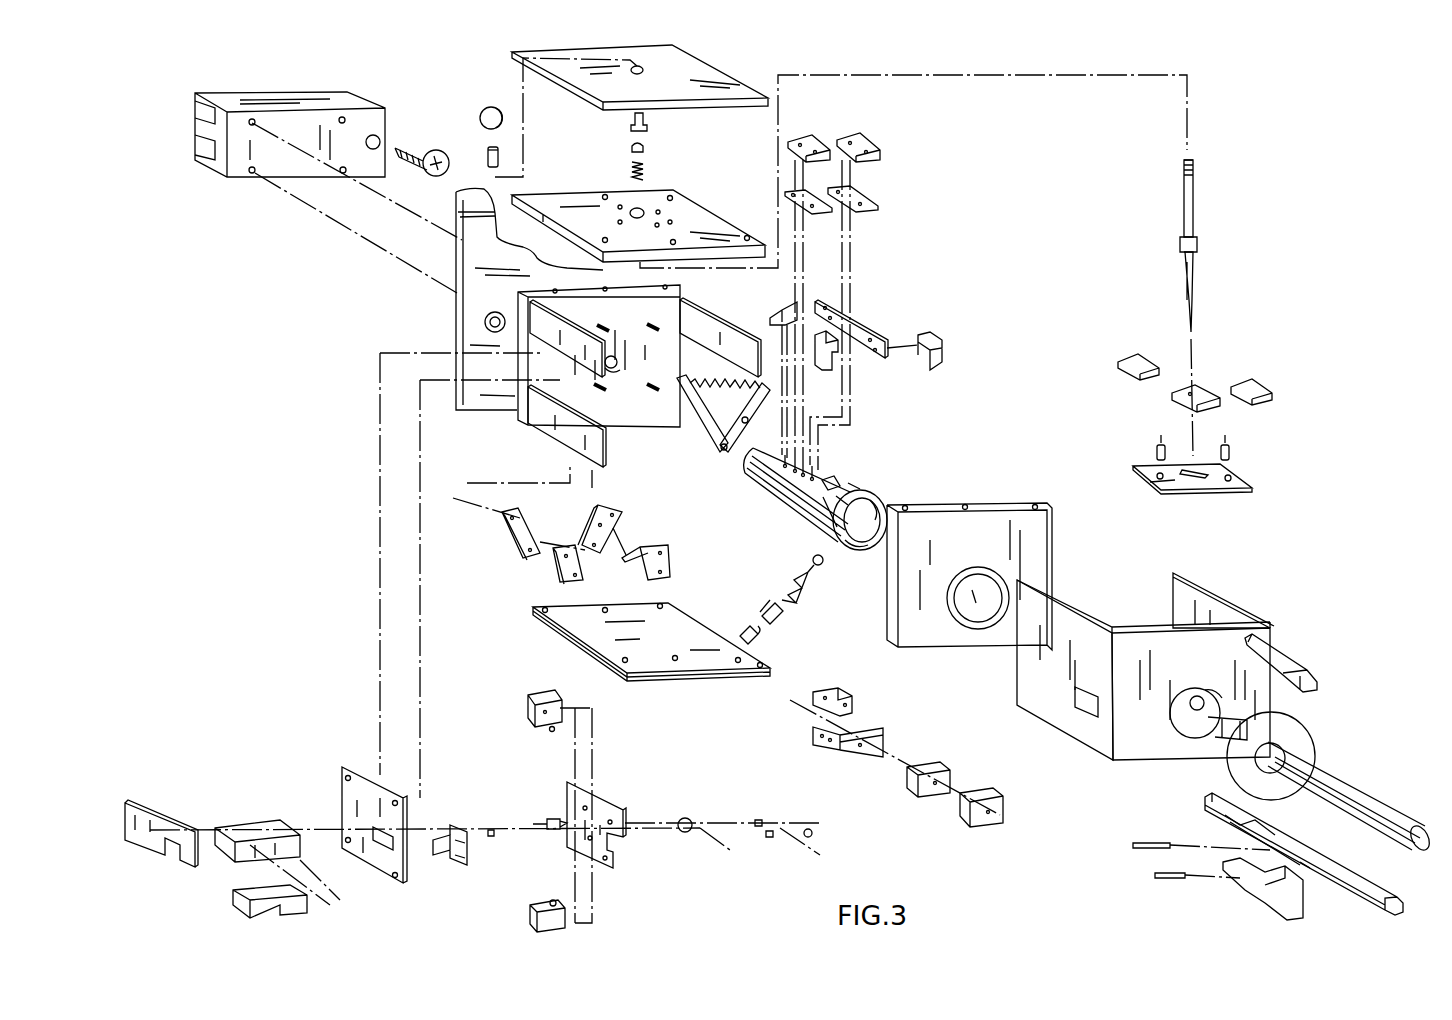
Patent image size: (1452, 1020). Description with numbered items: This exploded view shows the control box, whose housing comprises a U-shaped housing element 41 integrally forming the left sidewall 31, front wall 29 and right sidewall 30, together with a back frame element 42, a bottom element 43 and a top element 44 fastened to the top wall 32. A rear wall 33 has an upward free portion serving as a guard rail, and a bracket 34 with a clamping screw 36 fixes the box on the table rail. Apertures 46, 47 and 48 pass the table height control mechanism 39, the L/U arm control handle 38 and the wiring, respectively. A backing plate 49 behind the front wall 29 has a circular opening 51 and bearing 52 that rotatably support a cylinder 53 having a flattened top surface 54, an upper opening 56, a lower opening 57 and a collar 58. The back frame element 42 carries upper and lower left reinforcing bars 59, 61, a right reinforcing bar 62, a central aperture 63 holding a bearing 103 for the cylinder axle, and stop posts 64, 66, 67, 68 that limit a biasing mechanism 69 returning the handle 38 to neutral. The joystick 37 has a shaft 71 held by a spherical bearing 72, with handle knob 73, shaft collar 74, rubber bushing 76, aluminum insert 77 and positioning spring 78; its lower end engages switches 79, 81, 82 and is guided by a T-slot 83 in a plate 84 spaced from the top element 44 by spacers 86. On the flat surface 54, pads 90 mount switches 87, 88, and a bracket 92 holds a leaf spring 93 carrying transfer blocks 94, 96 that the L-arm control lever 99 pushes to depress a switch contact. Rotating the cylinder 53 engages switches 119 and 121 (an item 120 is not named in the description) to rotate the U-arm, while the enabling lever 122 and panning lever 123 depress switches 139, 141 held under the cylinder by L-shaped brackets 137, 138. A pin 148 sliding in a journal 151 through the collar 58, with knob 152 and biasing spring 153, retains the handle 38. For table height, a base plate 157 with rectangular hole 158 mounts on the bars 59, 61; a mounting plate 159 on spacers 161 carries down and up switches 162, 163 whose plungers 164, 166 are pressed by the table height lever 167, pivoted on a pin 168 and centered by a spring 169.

The front wall 29 is at (1135, 745).
The right sidewall 30 is at (1210, 600).
The left sidewall 31 is at (1042, 705).
The top wall 32 is at (712, 80).
The rear wall 33 is at (470, 252).
The bracket 34 is at (352, 102).
The clamping screw 36 is at (436, 150).
The joystick 37 is at (1203, 228).
The L/U arm control handle 38 is at (1326, 770).
The table height control mechanism 39 is at (265, 796).
The U-shaped housing element 41 is at (1115, 627).
The back frame element 42 is at (638, 408).
The bottom element 43 is at (595, 640).
The top element 44 is at (688, 215).
The aperture 46 is at (1085, 714).
The aperture 47 is at (1184, 736).
The aperture 48 is at (1200, 696).
The backing plate 49 is at (1000, 525).
The circular opening 51 is at (985, 635).
The bearing 52 is at (958, 618).
The cylinder 53 is at (770, 497).
The flattened top surface 54 is at (815, 468).
The upper opening 56 is at (832, 484).
The lower opening 57 is at (870, 550).
The collar 58 is at (878, 505).
The upper reinforcing bar 59 is at (540, 332).
The lower reinforcing bar 61 is at (545, 435).
The upper reinforcing bar 62 is at (702, 313).
The aperture 63 is at (618, 362).
The upper left stop post 64 is at (606, 328).
The upper right stop post 66 is at (658, 325).
The lower left stop post 67 is at (600, 388).
The lower right stop post 68 is at (655, 392).
The biasing mechanism 69 is at (713, 448).
The joystick shaft 71 is at (1180, 198).
The spherical bearing 72 is at (1200, 245).
The handle knob 73 is at (482, 110).
The shaft collar 74 is at (486, 156).
The rubber bushing 76 is at (648, 122).
The aluminum insert 77 is at (645, 147).
The positioning spring 78 is at (645, 175).
The switch 79 is at (1130, 375).
The switch 81 is at (1195, 388).
The switch 82 is at (1268, 390).
The T-slot 83 is at (1210, 482).
The plate 84 is at (1160, 482).
The spacers 86 is at (1232, 452).
The switch 87 is at (863, 140).
The switch 88 is at (812, 140).
The pads 90 is at (860, 197).
The bracket 92 is at (778, 305).
The leaf spring 93 is at (860, 328).
The transfer block 94 is at (828, 365).
The transfer block 96 is at (942, 345).
The L-arm control lever 99 is at (1290, 665).
The bearing 103 is at (487, 318).
The electrical switch 119 is at (672, 560).
The plates 120 is at (520, 535).
The electrical switch 121 is at (560, 572).
The enabling lever 122 is at (1340, 880).
The panning lever 123 is at (1265, 895).
The L-shaped bracket 137 is at (812, 698).
The L-shaped bracket 138 is at (823, 743).
The switch 139 is at (910, 785).
The switch 141 is at (968, 812).
The pin 148 is at (816, 558).
The journal 151 is at (758, 630).
The knob 152 is at (760, 612).
The biasing spring 153 is at (792, 594).
The base plate 157 is at (360, 775).
The rectangular hole 158 is at (382, 862).
The mounting plate 159 is at (612, 870).
The spacers 161 is at (545, 820).
The table height down switch 162 is at (525, 706).
The table height up switch 163 is at (528, 912).
The plunger 164 is at (548, 732).
The plunger 166 is at (553, 900).
The table height lever 167 is at (230, 853).
The pin 168 is at (270, 905).
The spring 169 is at (686, 818).